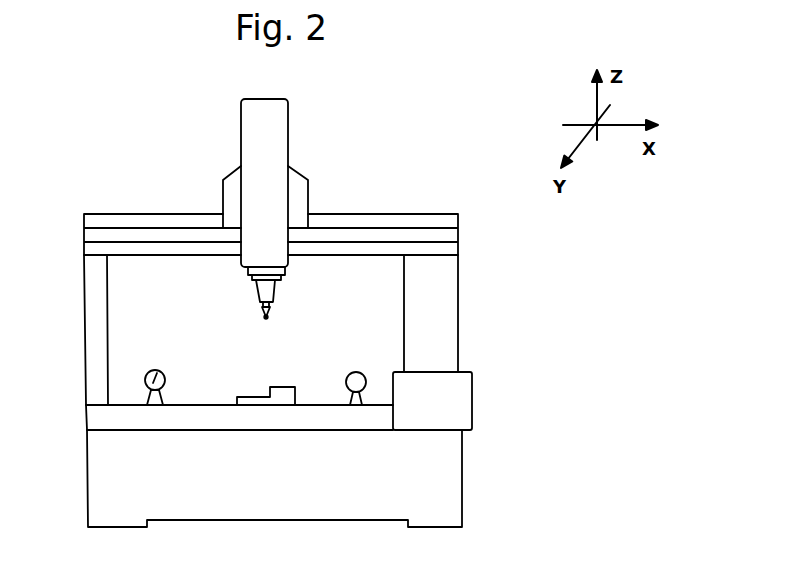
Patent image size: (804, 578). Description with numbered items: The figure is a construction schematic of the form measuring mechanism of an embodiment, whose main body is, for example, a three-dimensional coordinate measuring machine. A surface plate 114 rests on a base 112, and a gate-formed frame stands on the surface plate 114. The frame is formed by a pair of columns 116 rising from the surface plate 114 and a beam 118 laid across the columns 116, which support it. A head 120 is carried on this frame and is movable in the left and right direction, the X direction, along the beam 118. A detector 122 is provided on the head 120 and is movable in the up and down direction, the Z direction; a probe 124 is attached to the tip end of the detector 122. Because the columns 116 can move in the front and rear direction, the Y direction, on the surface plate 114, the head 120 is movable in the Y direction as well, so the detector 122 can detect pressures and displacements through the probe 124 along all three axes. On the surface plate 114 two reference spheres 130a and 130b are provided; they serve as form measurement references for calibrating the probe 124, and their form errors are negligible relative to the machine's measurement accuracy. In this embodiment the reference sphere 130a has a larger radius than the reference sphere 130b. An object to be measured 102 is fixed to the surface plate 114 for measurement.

The object to be measured 102 is at (261, 395).
The base 112 is at (455, 472).
The surface plate 114 is at (270, 420).
The columns 116 is at (440, 318).
The beam 118 is at (440, 232).
The head 120 is at (265, 143).
The detector 122 is at (262, 290).
The probe 124 is at (266, 317).
The reference sphere 130a is at (156, 370).
The reference sphere 130b is at (352, 373).